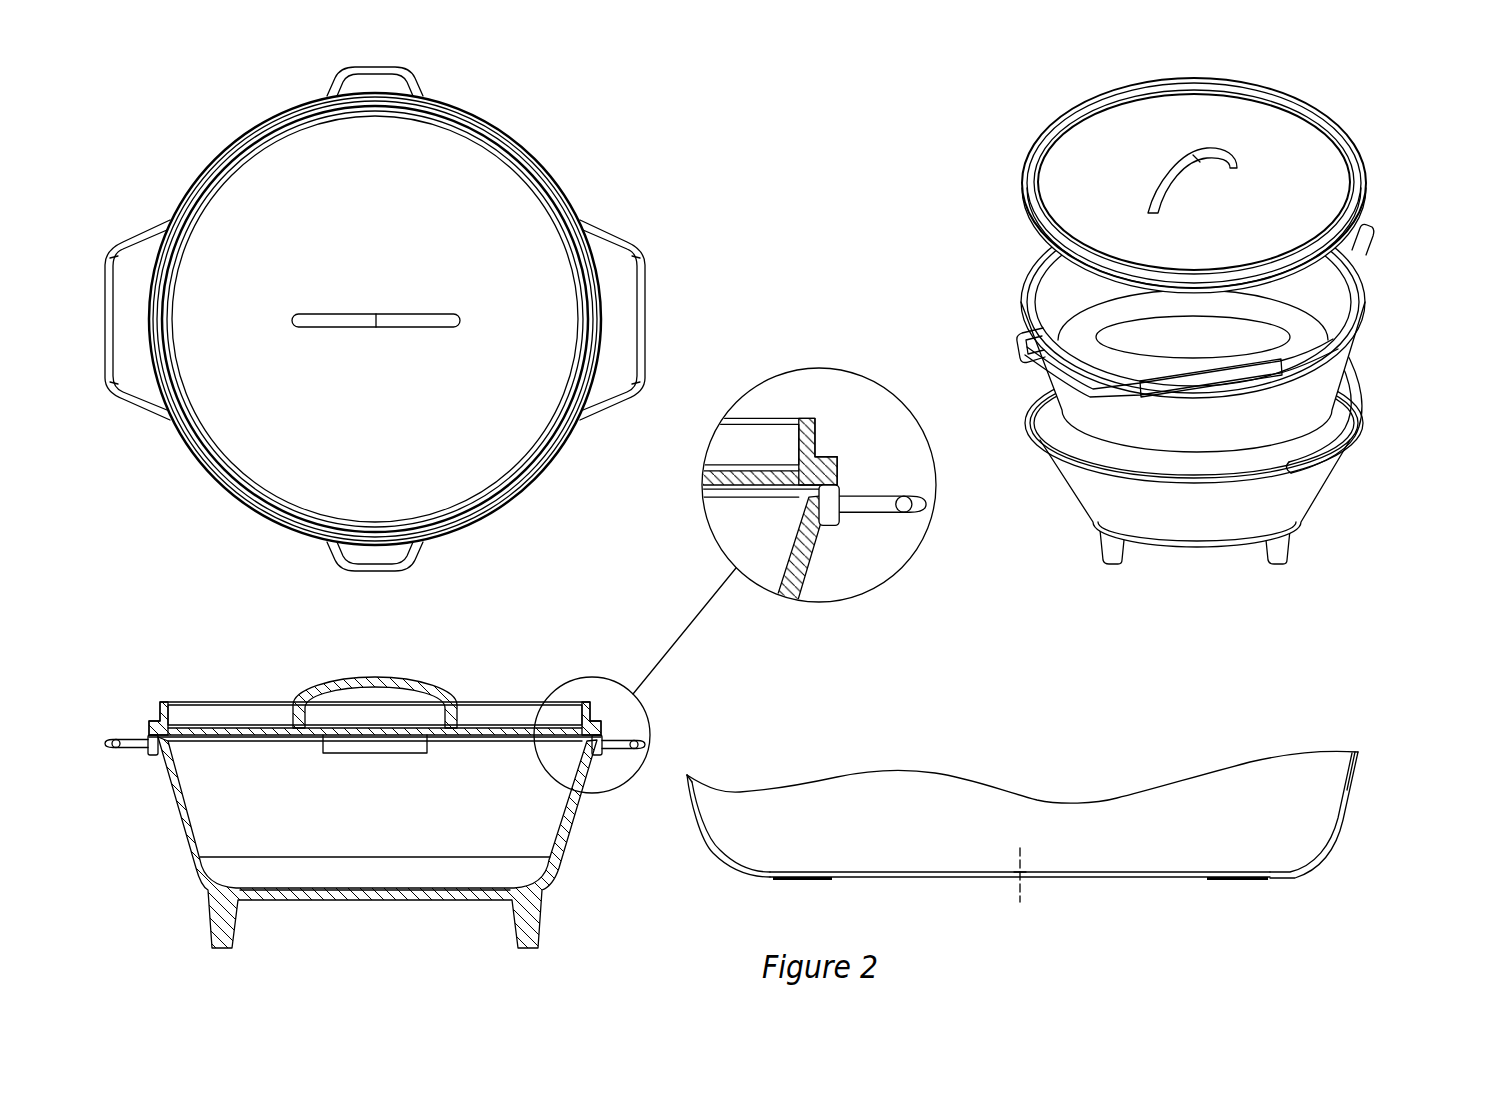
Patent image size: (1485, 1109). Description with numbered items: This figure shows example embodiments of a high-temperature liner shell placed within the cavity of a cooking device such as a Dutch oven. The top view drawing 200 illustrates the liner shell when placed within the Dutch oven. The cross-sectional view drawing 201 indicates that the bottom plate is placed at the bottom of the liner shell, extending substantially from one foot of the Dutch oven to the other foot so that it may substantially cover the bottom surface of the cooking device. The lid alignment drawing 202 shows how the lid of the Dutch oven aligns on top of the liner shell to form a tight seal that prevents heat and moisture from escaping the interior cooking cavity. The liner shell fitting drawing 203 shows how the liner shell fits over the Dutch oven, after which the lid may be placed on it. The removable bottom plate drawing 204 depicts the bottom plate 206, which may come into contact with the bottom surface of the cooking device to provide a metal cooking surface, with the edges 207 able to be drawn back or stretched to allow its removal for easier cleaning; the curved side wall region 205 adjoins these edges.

The top view drawing 200 is at (544, 472).
The cross-sectional view drawing 201 is at (578, 827).
The lid alignment drawing 202 is at (780, 417).
The liner shell fitting drawing 203 is at (1358, 287).
The removable bottom plate drawing 204 is at (1387, 778).
The pan side wall 205 is at (1322, 850).
The bottom plate 206 is at (925, 877).
The edges 207 is at (799, 880).